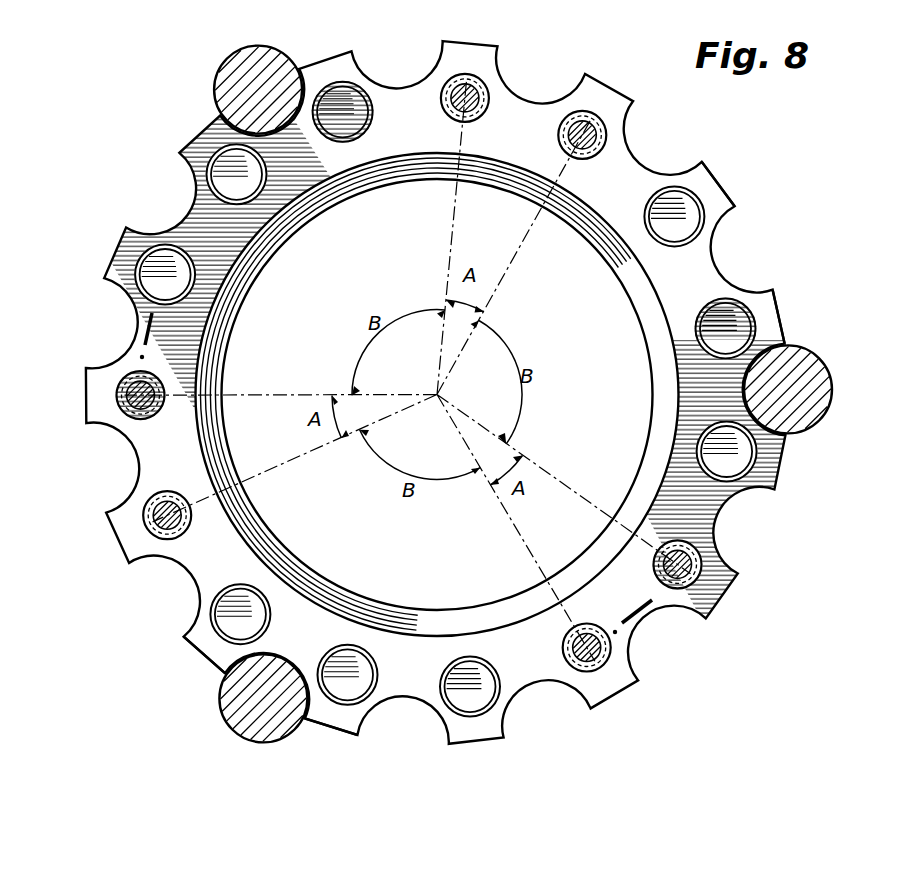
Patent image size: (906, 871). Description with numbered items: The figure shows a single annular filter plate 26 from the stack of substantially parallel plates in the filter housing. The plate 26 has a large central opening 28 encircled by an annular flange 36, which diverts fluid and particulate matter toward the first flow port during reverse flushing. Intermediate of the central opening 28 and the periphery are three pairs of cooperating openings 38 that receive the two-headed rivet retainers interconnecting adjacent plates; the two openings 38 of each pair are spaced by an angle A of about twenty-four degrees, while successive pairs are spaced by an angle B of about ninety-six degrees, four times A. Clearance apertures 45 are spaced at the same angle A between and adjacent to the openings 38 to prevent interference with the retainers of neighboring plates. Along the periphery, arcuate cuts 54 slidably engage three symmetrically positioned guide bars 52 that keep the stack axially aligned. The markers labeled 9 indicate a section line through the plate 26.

The section line 9- 9 is at (136, 326).
The annular filter plate 26 is at (478, 742).
The central opening 28 is at (346, 282).
The annular flange 36 is at (372, 178).
The cooperating opening 38 is at (466, 96).
The clearance aperture 45 is at (684, 218).
The guide bar 52 is at (258, 50).
The arcuate cut 54 is at (741, 263).